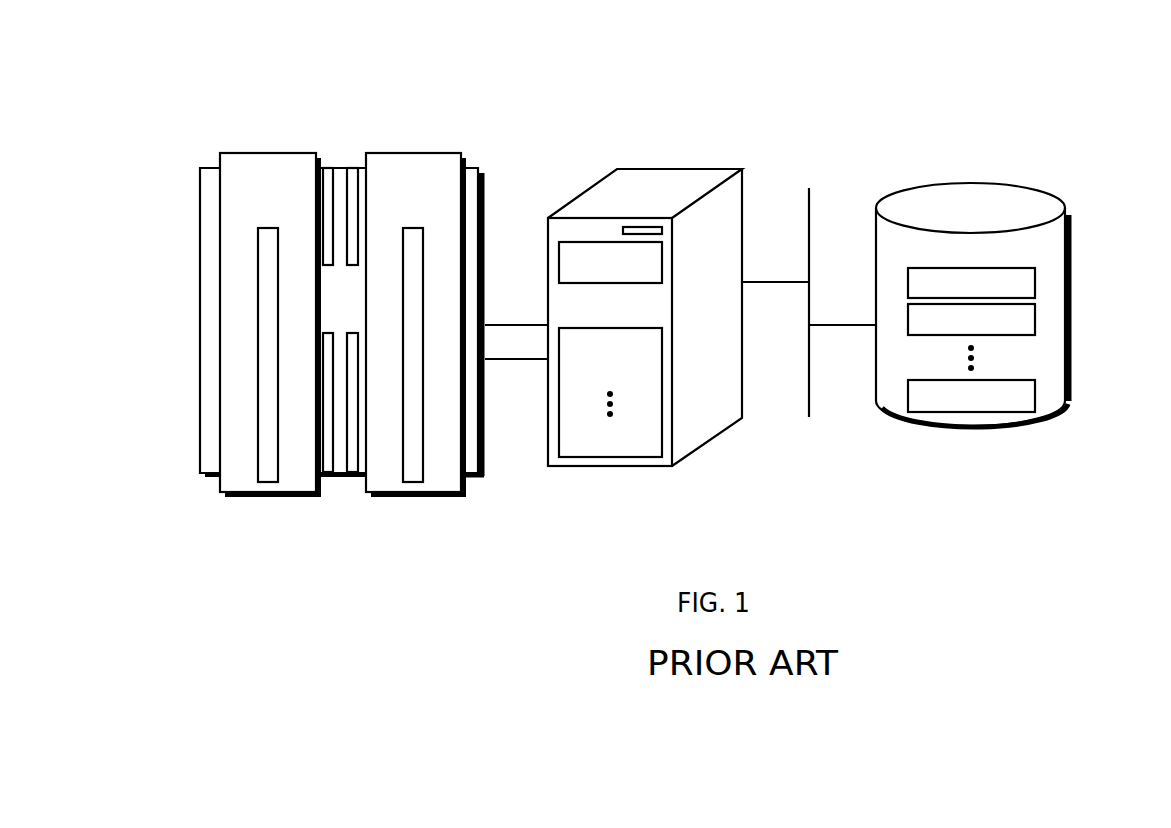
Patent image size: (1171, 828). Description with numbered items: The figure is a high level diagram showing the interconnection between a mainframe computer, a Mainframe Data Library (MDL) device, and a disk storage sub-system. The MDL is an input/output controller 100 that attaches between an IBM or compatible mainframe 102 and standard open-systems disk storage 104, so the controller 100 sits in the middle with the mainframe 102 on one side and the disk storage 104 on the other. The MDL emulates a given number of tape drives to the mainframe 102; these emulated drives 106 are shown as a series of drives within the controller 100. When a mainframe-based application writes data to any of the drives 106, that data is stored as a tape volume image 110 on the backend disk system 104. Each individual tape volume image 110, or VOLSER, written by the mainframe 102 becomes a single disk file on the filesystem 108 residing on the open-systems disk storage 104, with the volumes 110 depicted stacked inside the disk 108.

The input/output controller 100 is at (697, 180).
The mainframe 102 is at (408, 153).
The open-systems disk storage 104 is at (1085, 163).
The drives 106 is at (662, 437).
The filesystem 108 is at (1072, 233).
The tape volume image 110 is at (1040, 410).